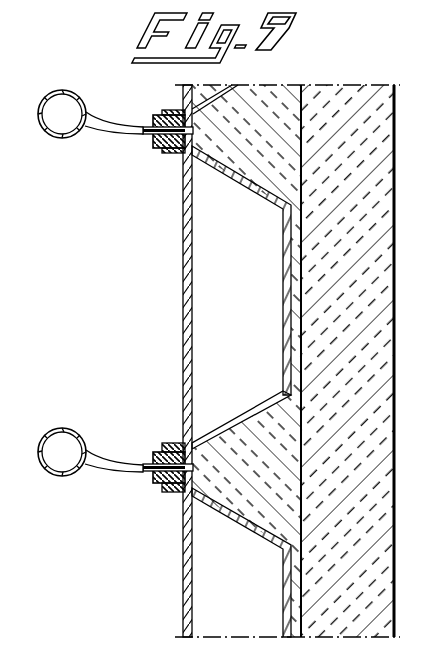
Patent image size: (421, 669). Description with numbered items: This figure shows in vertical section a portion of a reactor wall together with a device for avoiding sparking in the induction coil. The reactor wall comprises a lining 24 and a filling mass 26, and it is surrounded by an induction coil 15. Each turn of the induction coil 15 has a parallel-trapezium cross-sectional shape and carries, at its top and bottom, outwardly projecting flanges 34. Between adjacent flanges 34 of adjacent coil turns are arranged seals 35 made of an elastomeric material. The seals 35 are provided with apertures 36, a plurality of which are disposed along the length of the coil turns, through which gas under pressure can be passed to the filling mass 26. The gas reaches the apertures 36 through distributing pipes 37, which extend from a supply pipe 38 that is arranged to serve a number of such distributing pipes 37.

The induction coil 15 is at (183, 300).
The lining 24 is at (346, 100).
The filling mass 26 is at (265, 92).
The flanges 34 is at (170, 109).
The seals 35 is at (154, 151).
The apertures 36 is at (152, 117).
The distributing pipes 37 is at (114, 134).
The supply pipe 38 is at (47, 90).